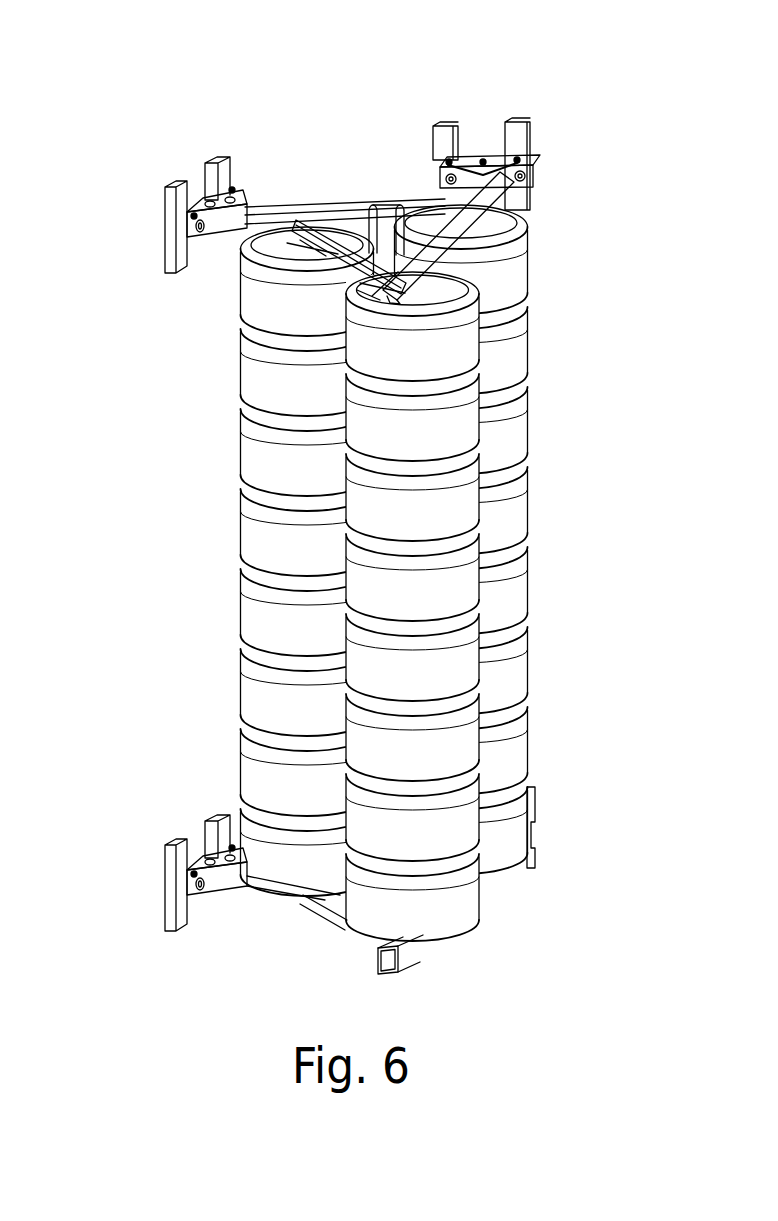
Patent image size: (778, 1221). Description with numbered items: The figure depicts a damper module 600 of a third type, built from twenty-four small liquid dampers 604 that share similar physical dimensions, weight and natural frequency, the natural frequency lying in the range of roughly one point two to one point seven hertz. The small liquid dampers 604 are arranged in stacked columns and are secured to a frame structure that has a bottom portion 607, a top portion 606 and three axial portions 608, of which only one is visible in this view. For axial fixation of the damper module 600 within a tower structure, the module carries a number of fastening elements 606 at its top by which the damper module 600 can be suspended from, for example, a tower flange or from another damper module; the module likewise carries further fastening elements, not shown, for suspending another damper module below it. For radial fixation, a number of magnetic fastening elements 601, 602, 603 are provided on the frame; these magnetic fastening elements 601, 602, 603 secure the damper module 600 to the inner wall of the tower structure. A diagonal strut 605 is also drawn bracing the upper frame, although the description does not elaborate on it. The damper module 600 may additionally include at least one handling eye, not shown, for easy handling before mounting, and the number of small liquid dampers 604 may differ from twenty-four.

The damper module 600 is at (579, 84).
The magnetic fastening element 601 is at (523, 116).
The magnetic fastening element 602 is at (213, 137).
The magnetic fastening element 603 is at (222, 795).
The small liquid damper 604 is at (245, 288).
The diagonal support strut 605 is at (457, 212).
The top portion 606 is at (393, 200).
The bottom portion 607 is at (405, 952).
The axial portion 608 is at (346, 268).